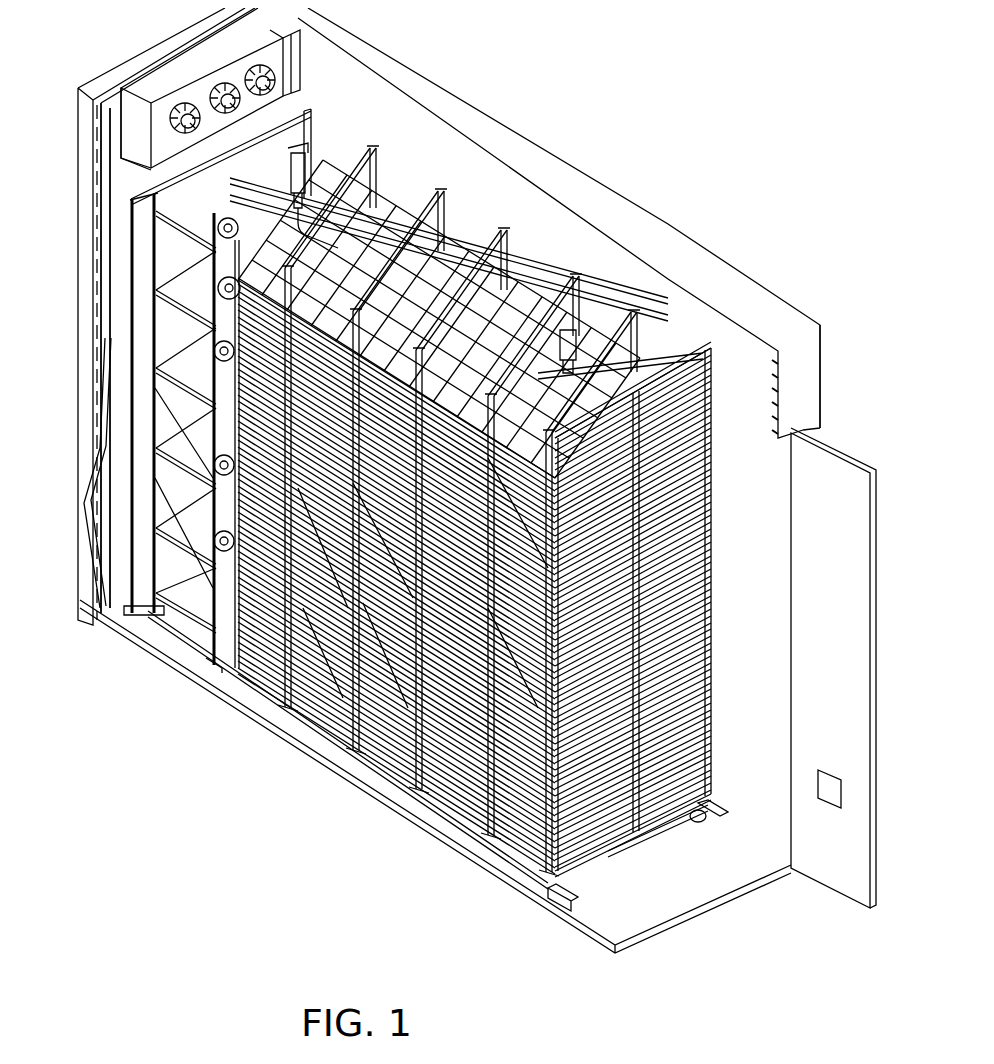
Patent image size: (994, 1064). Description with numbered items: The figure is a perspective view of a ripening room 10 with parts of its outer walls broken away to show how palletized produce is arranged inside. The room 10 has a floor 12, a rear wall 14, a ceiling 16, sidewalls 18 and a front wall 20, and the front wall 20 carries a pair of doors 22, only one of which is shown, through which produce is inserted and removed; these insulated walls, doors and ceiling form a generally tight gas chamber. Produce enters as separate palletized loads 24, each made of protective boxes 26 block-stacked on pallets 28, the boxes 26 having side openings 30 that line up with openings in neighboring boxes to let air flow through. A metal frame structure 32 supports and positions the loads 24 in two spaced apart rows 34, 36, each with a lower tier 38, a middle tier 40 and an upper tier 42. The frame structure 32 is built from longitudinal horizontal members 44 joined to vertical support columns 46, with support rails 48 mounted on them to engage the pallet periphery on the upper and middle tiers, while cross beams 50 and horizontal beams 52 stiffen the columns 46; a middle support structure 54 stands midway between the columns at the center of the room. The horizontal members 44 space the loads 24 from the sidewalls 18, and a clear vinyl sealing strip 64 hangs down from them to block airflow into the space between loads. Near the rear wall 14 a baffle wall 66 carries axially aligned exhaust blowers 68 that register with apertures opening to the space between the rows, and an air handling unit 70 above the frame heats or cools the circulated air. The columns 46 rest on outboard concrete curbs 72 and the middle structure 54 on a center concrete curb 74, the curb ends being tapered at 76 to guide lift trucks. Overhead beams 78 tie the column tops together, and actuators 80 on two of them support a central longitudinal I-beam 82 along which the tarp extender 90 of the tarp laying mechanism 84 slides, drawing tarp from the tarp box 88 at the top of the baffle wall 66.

The ripening room 10 is at (634, 194).
The floor 12 is at (698, 877).
The rear wall 14 is at (93, 163).
The ceiling 16 is at (782, 306).
The sidewalls 18 is at (80, 299).
The front wall 20 is at (807, 365).
The doors 22 is at (850, 697).
The palletized loads 24 is at (708, 456).
The protective boxes 26 is at (690, 412).
The pallets 28 is at (687, 531).
The side openings 30 is at (423, 793).
The metal frame structure 32 is at (167, 637).
The row 34 is at (583, 873).
The row 36 is at (673, 820).
The lower tier 38 is at (707, 717).
The middle tier 40 is at (709, 627).
The upper tier 42 is at (708, 478).
The horizontal members 44 is at (140, 316).
The vertical support columns 46 is at (217, 647).
The support rails 48 is at (145, 395).
The cross beams 50 is at (180, 262).
The horizontal beams 52 is at (185, 340).
The middle support structure 54 is at (622, 830).
The sealing strip 64 is at (143, 421).
The baffle wall 66 is at (128, 229).
The exhaust blowers 68 is at (115, 528).
The air handling unit 70 is at (310, 100).
The outboard concrete curbs 72 is at (543, 883).
The center concrete curb 74 is at (621, 840).
The tapered ends 76 is at (715, 808).
The overhead beams 78 is at (428, 203).
The actuators 80 is at (300, 140).
The I-beam 82 is at (397, 180).
The tarp laying mechanism 84 is at (314, 110).
The tarp box 88 is at (160, 180).
The tarp extender 90 is at (357, 188).